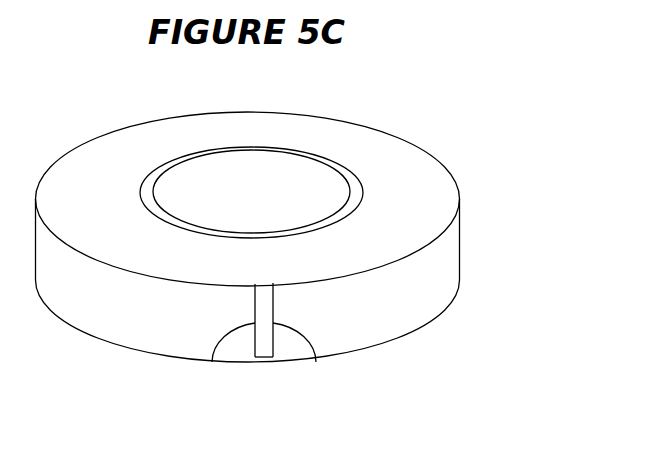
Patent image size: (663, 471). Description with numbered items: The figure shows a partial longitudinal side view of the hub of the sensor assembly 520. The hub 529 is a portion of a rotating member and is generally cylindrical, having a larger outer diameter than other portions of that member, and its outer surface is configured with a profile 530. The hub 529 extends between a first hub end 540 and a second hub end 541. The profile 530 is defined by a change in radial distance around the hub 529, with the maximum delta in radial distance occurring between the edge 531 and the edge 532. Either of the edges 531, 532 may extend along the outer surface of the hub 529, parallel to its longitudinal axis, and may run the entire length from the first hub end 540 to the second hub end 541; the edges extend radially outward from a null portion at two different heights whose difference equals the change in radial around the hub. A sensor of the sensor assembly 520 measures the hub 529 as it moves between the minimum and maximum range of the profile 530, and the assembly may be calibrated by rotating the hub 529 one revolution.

The sensor assembly 520 is at (90, 77).
The first hub end 540 is at (393, 155).
The hub 529 is at (453, 258).
The second hub end 541 is at (397, 338).
The profile 530 is at (265, 358).
The edge 531 is at (316, 362).
The edge 532 is at (212, 362).